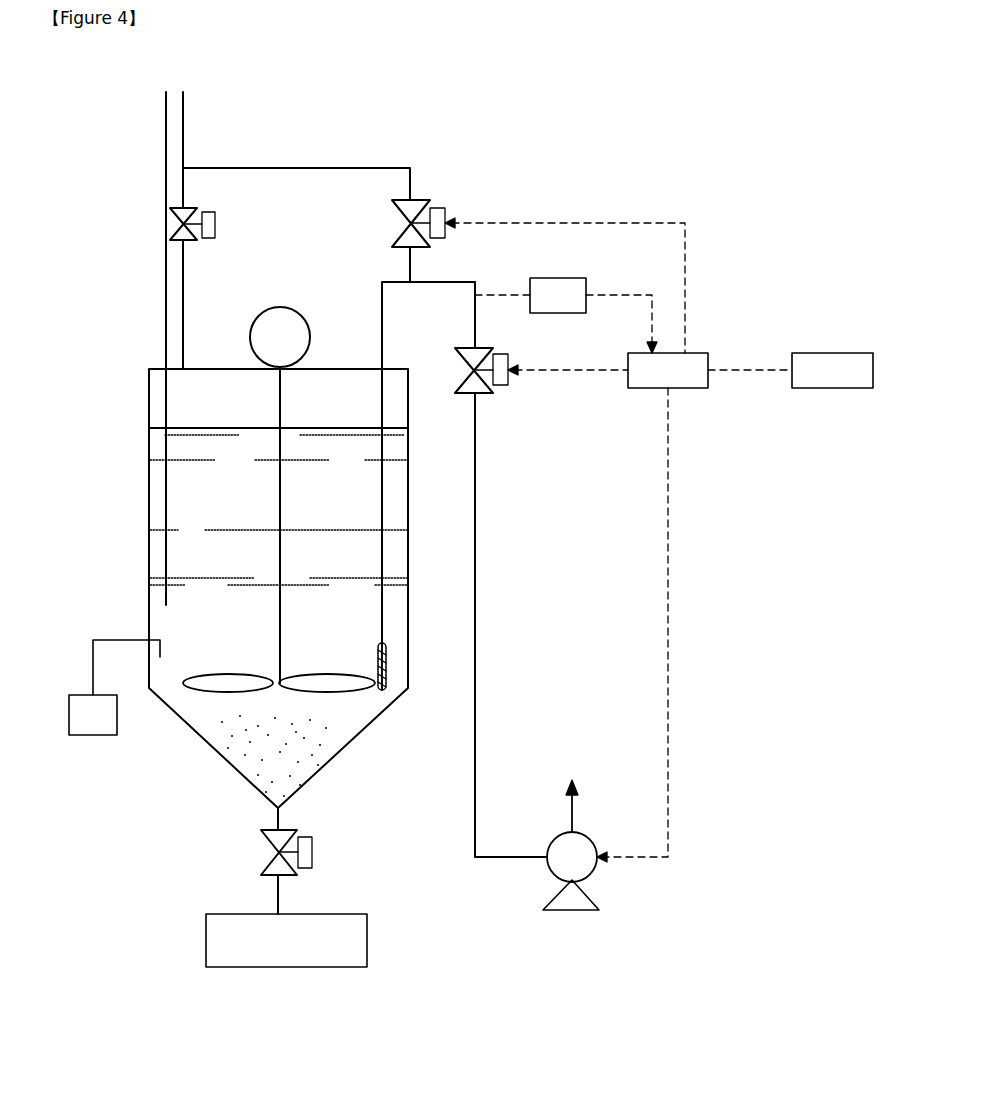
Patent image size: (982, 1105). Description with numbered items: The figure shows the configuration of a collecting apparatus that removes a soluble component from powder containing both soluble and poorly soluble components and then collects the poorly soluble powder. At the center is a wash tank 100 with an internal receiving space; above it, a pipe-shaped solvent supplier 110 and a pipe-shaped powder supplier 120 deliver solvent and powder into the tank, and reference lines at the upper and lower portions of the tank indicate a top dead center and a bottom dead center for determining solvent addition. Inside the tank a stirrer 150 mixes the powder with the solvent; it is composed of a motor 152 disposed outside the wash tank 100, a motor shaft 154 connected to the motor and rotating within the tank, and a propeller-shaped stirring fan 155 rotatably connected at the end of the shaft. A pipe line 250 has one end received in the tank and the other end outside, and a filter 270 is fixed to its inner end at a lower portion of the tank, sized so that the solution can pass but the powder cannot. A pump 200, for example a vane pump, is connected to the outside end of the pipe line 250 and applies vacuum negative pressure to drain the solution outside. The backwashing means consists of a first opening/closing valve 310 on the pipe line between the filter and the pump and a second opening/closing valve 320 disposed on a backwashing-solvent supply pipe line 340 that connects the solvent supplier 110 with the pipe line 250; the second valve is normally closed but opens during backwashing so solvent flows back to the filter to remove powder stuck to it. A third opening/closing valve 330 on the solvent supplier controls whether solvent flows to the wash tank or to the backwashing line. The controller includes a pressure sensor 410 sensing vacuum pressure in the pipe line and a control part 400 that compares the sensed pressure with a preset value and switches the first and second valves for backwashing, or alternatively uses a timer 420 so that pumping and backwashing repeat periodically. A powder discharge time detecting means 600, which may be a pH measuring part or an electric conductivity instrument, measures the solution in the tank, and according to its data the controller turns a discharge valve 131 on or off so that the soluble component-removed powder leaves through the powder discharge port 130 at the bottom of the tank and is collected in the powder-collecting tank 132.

The wash tank 100 is at (215, 750).
The solvent supplier 110 is at (183, 262).
The powder supplier 120 is at (166, 100).
The powder discharge port 130 is at (275, 892).
The discharge valve 131 is at (315, 852).
The powder-collecting tank 132 is at (206, 930).
The stirrer 150 is at (311, 308).
The motor 152 is at (277, 307).
The motor shaft 154 is at (278, 418).
The stirring fan 155 is at (325, 692).
The pump 200 is at (545, 872).
The pipe line 250 is at (476, 625).
The filter 270 is at (385, 692).
The first opening/closing valve 310 is at (485, 395).
The second opening/closing valve 320 is at (420, 200).
The third opening/closing valve 330 is at (170, 208).
The backwashing-solvent supply pipe line 340 is at (250, 168).
The control part 400 is at (690, 353).
The pressure sensor 410 is at (557, 278).
The timer 420 is at (830, 353).
The powder discharge time detecting means 600 is at (95, 738).